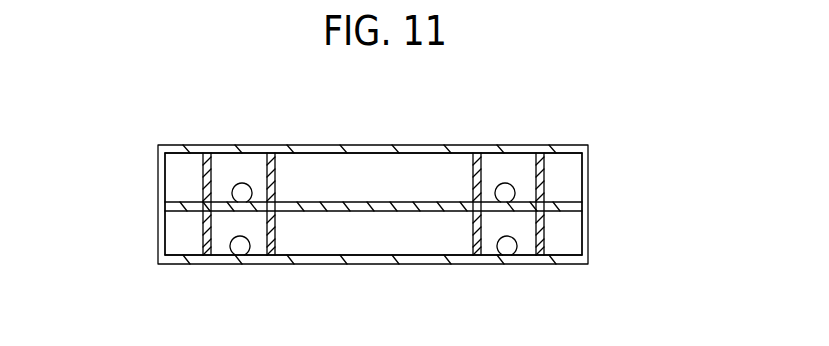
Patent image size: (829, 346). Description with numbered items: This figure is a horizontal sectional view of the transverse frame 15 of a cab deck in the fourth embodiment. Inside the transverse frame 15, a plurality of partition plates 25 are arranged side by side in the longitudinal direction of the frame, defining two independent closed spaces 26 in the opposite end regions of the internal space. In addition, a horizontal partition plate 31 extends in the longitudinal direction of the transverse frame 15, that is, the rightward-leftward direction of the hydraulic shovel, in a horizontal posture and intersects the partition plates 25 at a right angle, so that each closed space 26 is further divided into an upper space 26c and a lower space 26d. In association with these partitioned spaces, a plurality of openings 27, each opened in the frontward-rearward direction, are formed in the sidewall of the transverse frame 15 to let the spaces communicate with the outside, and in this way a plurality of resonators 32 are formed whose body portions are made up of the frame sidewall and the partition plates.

The transverse frame 15 is at (371, 145).
The partition plate 25 is at (276, 175).
The closed space 26 is at (72, 150).
The upper space 26c is at (222, 180).
The lower space 26d is at (222, 235).
The opening 27 is at (240, 188).
The horizontal partition plate 31 is at (370, 212).
The resonator 32 is at (215, 138).